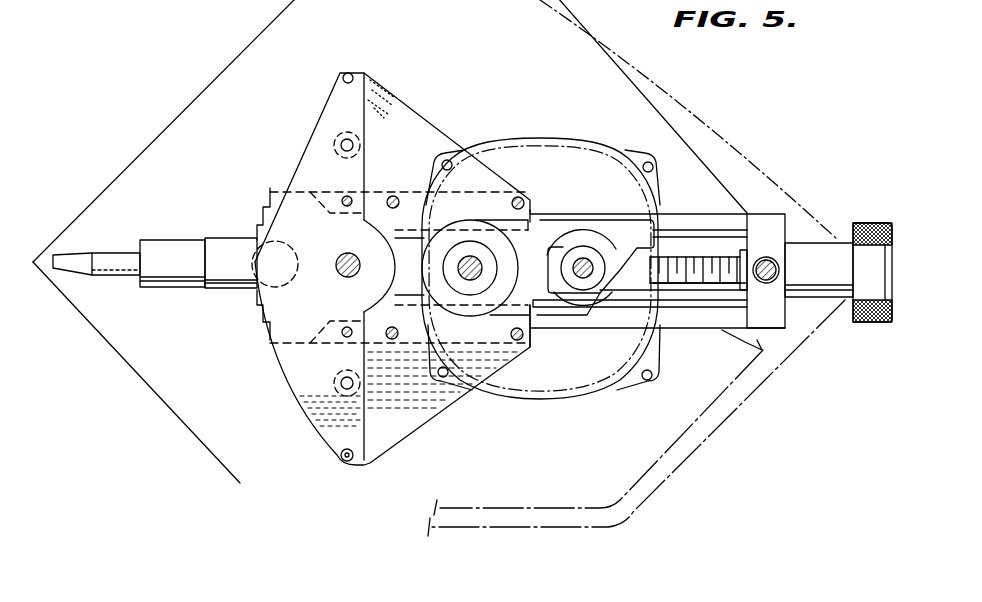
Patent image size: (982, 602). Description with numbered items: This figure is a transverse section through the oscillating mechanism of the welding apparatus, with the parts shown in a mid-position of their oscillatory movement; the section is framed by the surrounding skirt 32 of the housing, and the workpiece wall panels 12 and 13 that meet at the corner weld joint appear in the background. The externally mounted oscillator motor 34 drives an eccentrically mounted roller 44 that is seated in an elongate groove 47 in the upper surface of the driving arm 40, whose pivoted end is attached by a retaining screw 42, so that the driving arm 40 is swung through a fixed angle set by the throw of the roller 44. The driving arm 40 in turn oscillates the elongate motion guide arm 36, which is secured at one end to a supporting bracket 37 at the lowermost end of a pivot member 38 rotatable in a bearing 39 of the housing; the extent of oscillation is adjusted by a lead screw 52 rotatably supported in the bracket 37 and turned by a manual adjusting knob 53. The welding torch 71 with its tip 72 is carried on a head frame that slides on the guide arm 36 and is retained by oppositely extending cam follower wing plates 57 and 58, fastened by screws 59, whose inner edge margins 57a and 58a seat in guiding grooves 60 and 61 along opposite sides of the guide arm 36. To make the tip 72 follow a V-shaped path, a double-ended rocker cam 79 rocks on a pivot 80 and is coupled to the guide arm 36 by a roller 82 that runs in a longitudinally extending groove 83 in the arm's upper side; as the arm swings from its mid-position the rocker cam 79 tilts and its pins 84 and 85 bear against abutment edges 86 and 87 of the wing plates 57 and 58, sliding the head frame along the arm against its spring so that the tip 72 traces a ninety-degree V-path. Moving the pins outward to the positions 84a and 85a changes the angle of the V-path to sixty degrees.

The wall panel 12 is at (130, 165).
The wall panel 13 is at (95, 332).
The surrounding skirt 32 is at (680, 98).
The oscillator motor 34 is at (545, 133).
The motion guide arm 36 is at (675, 210).
The supporting bracket 37 is at (838, 243).
The pivot member 38 is at (770, 283).
The bearing 39 is at (755, 353).
The driving arm 40 is at (541, 265).
The retaining screw 42 is at (467, 280).
The eccentrically mounted roller 44 is at (587, 252).
The elongate groove 47 is at (557, 230).
The lead screw 52 is at (707, 263).
The manual adjusting knob 53 is at (813, 255).
The wing plate 57 is at (433, 130).
The inner edge margin 57a is at (540, 207).
The wing plate 58 is at (398, 418).
The inner edge margin 58a is at (533, 332).
The screws 59 is at (402, 182).
The guiding groove 60 is at (680, 222).
The guiding groove 61 is at (672, 320).
The welding torch 71 is at (228, 277).
The welding tip 72 is at (72, 254).
The double-ended rocker cam 79 is at (330, 311).
The pivot 80 is at (367, 243).
The roller 82 is at (258, 246).
The longitudinally extending groove 83 is at (668, 313).
The pin 84 is at (362, 145).
The outward pin position 84a is at (348, 72).
The pin 85 is at (334, 389).
The outward pin position 85a is at (341, 456).
The abutment edge 86 is at (372, 85).
The abutment edge 87 is at (352, 420).